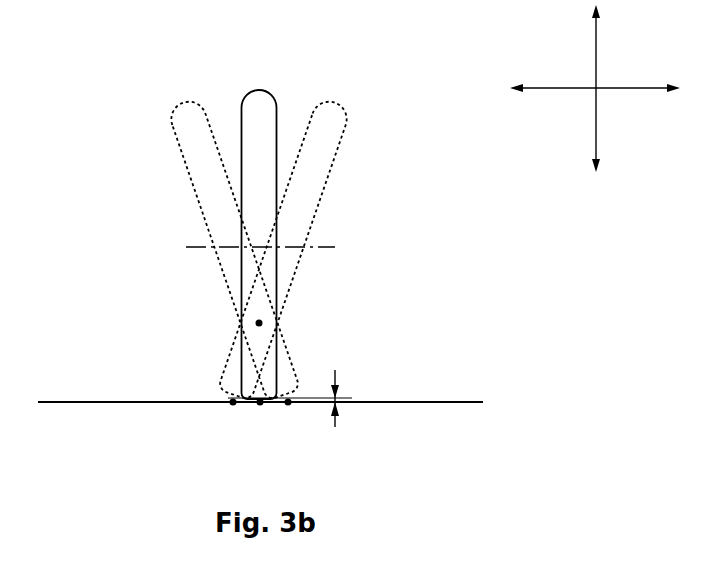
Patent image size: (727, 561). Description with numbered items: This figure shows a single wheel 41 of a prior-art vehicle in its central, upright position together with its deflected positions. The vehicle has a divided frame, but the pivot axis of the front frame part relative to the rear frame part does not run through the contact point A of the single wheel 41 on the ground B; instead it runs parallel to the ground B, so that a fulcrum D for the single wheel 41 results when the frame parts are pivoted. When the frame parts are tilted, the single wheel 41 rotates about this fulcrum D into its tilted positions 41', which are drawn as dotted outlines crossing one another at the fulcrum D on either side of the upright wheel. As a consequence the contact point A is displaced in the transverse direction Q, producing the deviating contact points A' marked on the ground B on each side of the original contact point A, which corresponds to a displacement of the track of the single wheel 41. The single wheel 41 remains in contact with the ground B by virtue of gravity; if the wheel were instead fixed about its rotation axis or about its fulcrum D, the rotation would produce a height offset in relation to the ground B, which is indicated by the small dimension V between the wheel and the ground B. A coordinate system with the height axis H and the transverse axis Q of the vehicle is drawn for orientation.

The single wheel 41 is at (263, 208).
The tilted positions of the single wheel 41' is at (260, 209).
The contact point A is at (260, 446).
The deviating contact points A' is at (262, 446).
The ground B is at (108, 392).
The fulcrum D is at (259, 323).
The vertical offset between element and surface V is at (350, 395).
The height axis H is at (610, 88).
The transverse axis Q is at (592, 72).